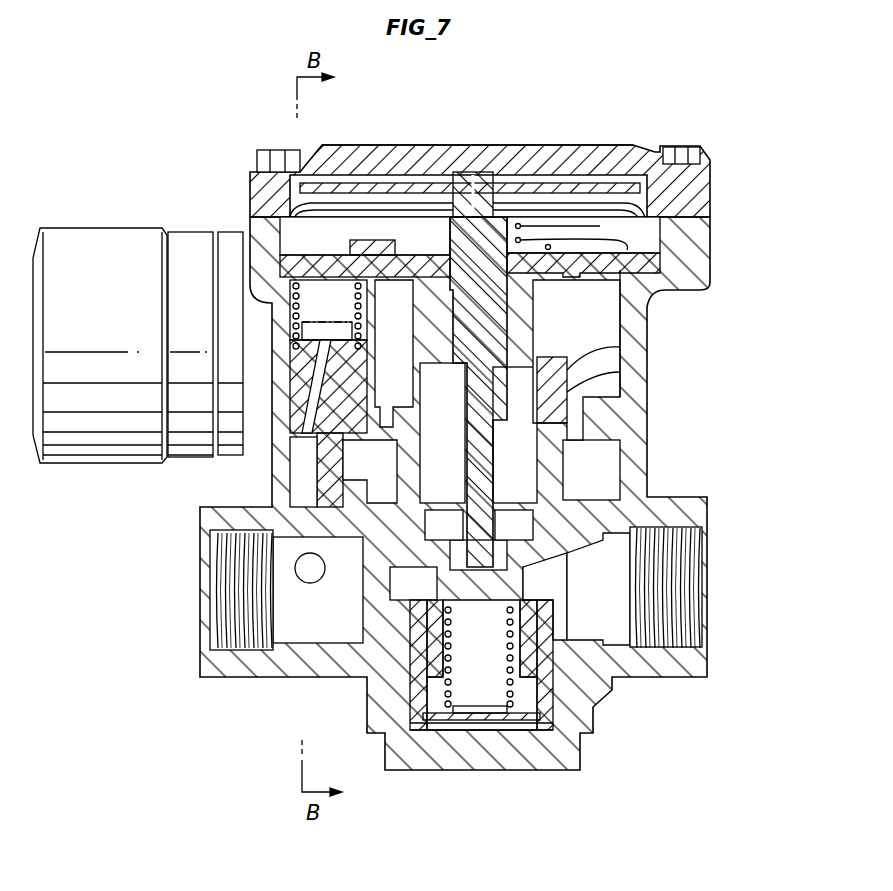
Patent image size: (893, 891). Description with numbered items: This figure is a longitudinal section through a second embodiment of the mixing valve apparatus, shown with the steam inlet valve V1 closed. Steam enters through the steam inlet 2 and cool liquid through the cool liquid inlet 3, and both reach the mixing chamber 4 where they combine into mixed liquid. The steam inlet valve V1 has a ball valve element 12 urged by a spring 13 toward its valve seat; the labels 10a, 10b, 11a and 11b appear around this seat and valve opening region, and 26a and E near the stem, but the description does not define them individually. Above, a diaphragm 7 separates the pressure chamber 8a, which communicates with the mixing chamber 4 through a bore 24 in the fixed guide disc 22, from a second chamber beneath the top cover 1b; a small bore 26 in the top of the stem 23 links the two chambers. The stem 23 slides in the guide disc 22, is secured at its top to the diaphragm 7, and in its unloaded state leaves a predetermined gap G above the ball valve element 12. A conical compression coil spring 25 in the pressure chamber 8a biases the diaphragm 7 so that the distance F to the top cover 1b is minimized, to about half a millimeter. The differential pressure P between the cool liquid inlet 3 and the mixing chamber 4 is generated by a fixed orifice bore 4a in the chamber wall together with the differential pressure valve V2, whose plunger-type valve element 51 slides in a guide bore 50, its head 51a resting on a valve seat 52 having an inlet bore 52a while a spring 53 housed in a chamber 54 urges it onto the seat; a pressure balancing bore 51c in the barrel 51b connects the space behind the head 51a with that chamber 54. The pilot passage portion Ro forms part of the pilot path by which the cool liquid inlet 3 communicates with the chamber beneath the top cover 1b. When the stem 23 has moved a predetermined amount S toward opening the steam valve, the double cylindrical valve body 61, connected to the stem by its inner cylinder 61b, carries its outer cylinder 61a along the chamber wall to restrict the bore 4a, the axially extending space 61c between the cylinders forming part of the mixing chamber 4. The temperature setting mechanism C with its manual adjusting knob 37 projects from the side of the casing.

The manual adjusting knob 37 is at (87, 235).
The temperature setting mechanism C is at (128, 223).
The distance between top cover and diaphragm F is at (332, 152).
The top cover 1b is at (362, 160).
The pressure chamber 8a is at (393, 220).
The small bore 26 is at (427, 220).
The conical compression coil spring 25 is at (530, 232).
The diaphragm 7 is at (608, 185).
The guide disc 22 is at (672, 262).
The bore 24 is at (385, 262).
The chamber 54 is at (293, 293).
The spring 53 is at (295, 323).
The barrel 51b is at (290, 367).
The pressure balancing bore 51c is at (290, 408).
The differential pressure valve V2 is at (295, 420).
The guide bore 50 is at (272, 470).
The valve element 51 is at (273, 490).
The head 51a is at (295, 530).
The valve seat 52 is at (280, 560).
The inlet bore 52a is at (337, 537).
The pilot passage portion Ro is at (305, 575).
The cool liquid inlet 3 is at (200, 620).
The differential pressure P is at (303, 472).
The stem 23 is at (413, 288).
The spool chamber 26a is at (540, 312).
The axially extending space 61c is at (537, 347).
The double cylindrical valve body 61 is at (640, 345).
The outer cylinder 61a is at (640, 372).
The inner cylinder 61b is at (640, 398).
The fixed orifice bore 4a is at (405, 465).
The mixing chamber 4 is at (568, 490).
The predetermined amount of stem movement S is at (432, 428).
The chamber E is at (515, 435).
The valve guide 11a is at (466, 540).
The predetermined gap G is at (514, 525).
The steam inlet 2 is at (690, 565).
The passage 10a is at (560, 577).
The steam inlet valve V1 is at (560, 600).
The valve chamber 10b is at (467, 600).
The ball valve element 12 is at (525, 648).
The spring 13 is at (510, 670).
The valve seat member 11b is at (413, 690).